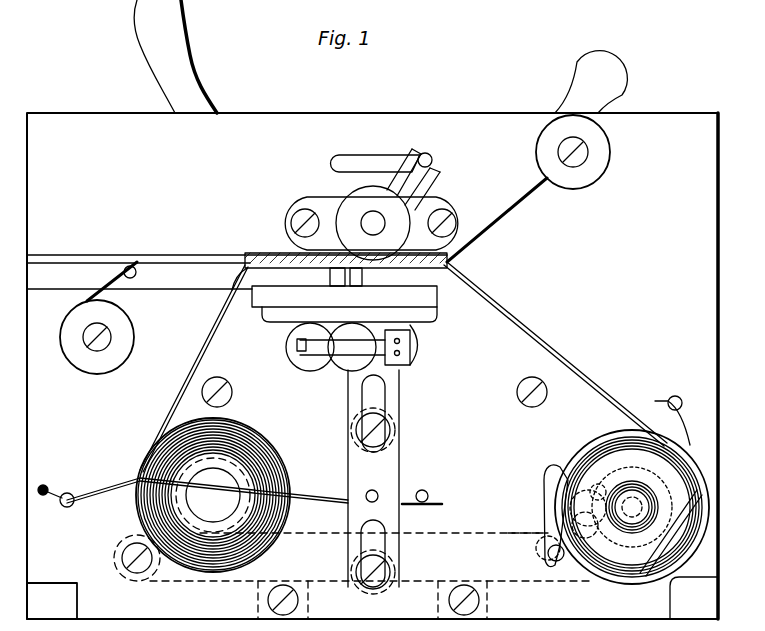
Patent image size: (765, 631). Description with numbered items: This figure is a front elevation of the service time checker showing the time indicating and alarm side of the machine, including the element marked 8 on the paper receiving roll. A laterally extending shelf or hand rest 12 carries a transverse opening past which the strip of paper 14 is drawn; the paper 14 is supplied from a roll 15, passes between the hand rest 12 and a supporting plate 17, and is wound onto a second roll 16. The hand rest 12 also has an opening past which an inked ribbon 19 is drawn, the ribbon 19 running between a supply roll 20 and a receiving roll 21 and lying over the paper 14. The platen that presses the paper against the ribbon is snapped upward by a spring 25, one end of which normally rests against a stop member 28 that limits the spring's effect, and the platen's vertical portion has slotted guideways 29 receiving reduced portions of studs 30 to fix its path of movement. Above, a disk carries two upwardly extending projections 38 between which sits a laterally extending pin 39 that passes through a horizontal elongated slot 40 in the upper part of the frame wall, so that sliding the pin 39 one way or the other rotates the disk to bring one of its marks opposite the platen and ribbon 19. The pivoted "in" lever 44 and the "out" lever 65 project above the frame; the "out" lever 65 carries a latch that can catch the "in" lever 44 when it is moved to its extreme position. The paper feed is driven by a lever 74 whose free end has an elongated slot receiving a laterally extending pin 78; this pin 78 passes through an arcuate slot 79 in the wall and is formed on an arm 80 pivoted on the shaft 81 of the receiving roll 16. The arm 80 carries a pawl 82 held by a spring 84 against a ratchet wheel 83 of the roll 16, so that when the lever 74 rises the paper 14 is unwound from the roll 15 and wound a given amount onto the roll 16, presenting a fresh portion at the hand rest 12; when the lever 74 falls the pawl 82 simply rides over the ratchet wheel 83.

The spoke arm 8 is at (690, 490).
The shelf or hand rest 12 is at (90, 253).
The paper 14 is at (527, 318).
The roll 15 is at (255, 440).
The second roll 16 is at (636, 462).
The supporting plate 17 is at (447, 270).
The inked ribbon 19 is at (120, 278).
The supply roll 20 is at (97, 374).
The receiving roll 21 is at (612, 152).
The spring 25 is at (316, 486).
The stop member 28 is at (428, 490).
The slotted guideways 29 is at (385, 390).
The studs 30 is at (390, 430).
The upwardly extending projections 38 is at (418, 147).
The laterally extending pin 39 is at (432, 158).
The elongated slot 40 is at (356, 152).
The "in" lever 44 is at (627, 73).
The "out" lever 65 is at (185, 28).
The lever 74 is at (508, 533).
The laterally extending pin 78 is at (548, 553).
The arcuate slot 79 is at (543, 495).
The arm 80 is at (600, 540).
The shaft 81 is at (628, 500).
The pawl 82 is at (572, 500).
The ratchet wheel 83 is at (592, 488).
The spring 84 is at (575, 505).